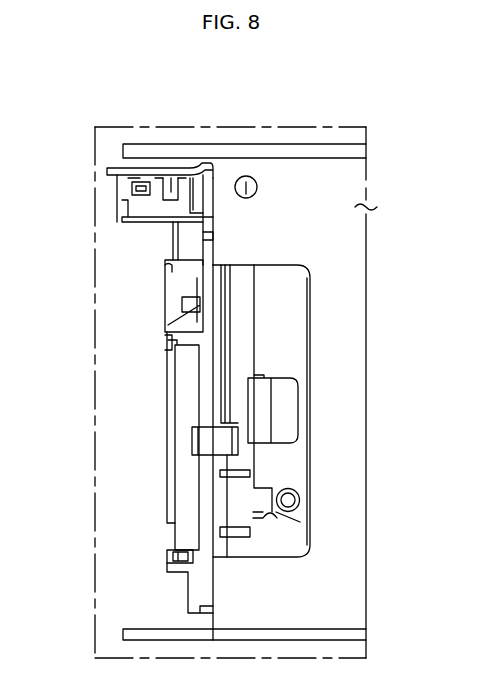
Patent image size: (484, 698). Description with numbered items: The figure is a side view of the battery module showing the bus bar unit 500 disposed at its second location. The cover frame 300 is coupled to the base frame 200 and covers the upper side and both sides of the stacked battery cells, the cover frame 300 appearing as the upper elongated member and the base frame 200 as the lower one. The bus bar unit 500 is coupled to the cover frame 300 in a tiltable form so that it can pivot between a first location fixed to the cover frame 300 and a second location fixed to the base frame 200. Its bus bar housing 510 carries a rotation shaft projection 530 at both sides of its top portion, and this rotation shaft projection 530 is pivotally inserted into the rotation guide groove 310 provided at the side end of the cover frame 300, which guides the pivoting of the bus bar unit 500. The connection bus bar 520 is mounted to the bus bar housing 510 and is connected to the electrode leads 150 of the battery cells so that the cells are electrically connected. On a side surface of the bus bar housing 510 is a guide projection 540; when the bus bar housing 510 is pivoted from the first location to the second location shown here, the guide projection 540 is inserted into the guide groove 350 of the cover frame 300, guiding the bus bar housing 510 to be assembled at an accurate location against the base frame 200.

The electrode lead 150 is at (172, 495).
The base frame 200 is at (360, 634).
The cover frame 300 is at (355, 207).
The rotation guide groove 310 is at (248, 177).
The guide groove 350 is at (298, 519).
The bus bar unit 500 is at (155, 423).
The bus bar housing 510 is at (197, 592).
The connection bus bar 520 is at (187, 538).
The rotation shaft projection 530 is at (244, 186).
The guide projection 540 is at (300, 495).